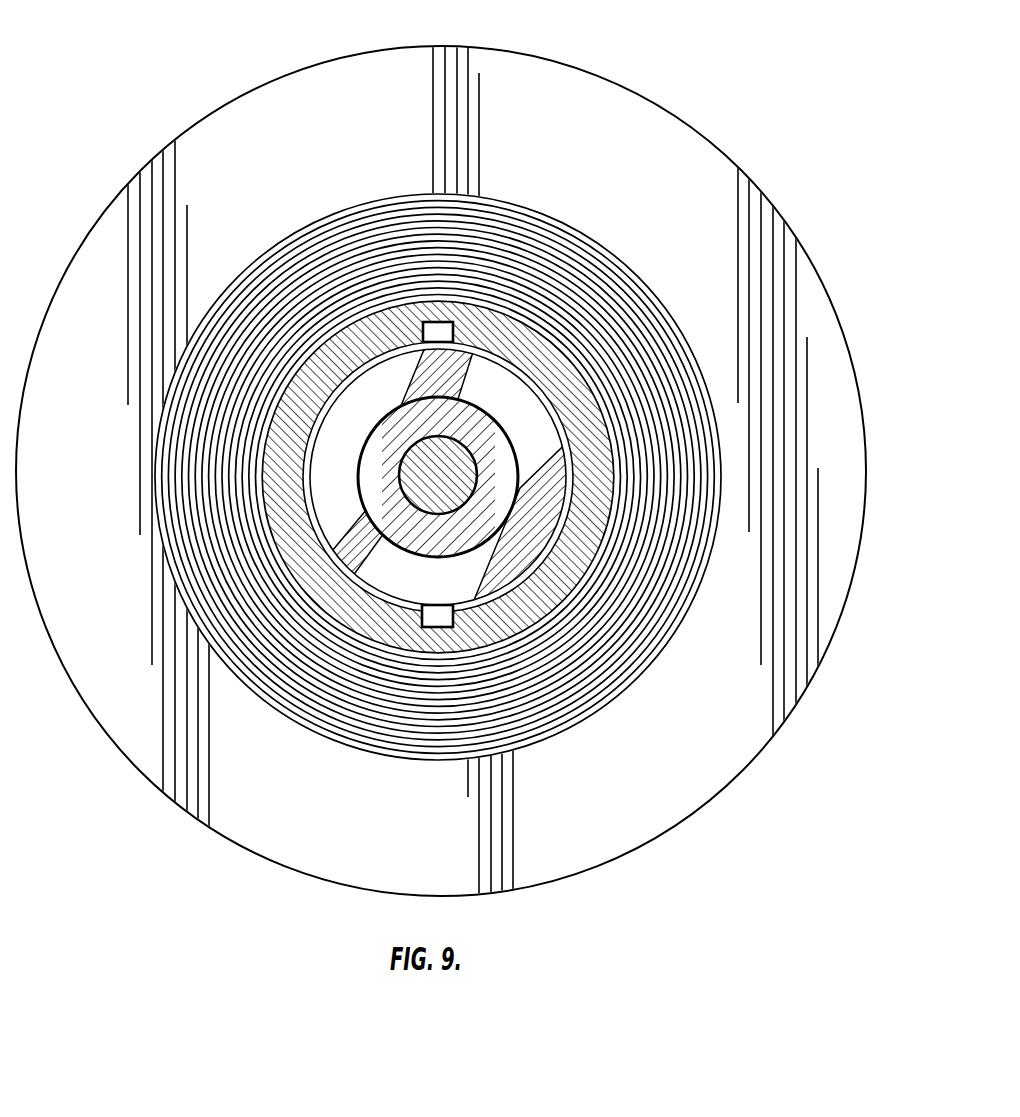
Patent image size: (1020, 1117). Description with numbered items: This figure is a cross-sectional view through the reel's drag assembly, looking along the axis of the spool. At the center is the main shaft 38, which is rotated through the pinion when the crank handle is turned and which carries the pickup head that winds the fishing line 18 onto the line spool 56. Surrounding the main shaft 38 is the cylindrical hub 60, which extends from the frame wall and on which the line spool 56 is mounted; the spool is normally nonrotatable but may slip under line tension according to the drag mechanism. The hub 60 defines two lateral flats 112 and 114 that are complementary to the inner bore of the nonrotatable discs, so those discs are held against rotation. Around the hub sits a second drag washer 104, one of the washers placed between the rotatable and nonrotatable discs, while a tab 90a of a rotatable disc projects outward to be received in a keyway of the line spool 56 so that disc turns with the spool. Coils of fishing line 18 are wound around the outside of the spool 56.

The line spool 56 is at (613, 118).
The fishing line 18 is at (306, 224).
The second drag washer 104 is at (397, 376).
The tab 90a is at (458, 337).
The cylindrical hub 60 is at (480, 397).
The lateral flat 114 is at (497, 467).
The main shaft 38 is at (428, 516).
The lateral flat 112 is at (380, 478).